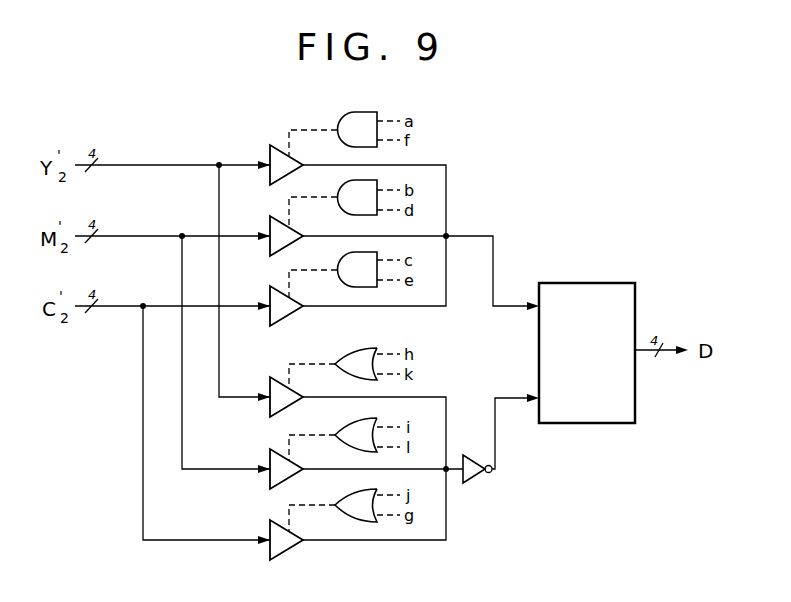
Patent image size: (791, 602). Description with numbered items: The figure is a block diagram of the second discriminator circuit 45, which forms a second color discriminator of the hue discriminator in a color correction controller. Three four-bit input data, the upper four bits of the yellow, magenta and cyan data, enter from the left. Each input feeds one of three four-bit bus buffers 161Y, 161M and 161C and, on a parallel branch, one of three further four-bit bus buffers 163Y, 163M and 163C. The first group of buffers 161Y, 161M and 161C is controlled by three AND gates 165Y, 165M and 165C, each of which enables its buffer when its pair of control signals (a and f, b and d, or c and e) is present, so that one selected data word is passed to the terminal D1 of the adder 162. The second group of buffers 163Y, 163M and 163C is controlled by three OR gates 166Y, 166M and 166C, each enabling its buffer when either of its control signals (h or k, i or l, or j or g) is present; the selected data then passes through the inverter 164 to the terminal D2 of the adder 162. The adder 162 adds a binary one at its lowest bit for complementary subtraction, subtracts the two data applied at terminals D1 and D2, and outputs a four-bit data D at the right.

The second discriminator circuit 45 is at (480, 176).
The 4-bits bus buffer 161Y is at (270, 148).
The 4-bits bus buffer 161M is at (270, 220).
The 4-bits bus buffer 161C is at (270, 290).
The 4-bits bus buffer 163Y is at (270, 380).
The 4-bits bus buffer 163M is at (270, 460).
The 4-bits bus buffer 163C is at (270, 530).
The AND gate 165Y is at (348, 112).
The AND gate 165M is at (349, 188).
The AND gate 165C is at (349, 258).
The OR gate 166Y is at (356, 348).
The OR gate 166M is at (354, 420).
The OR gate 166C is at (356, 490).
The inverter 164 is at (470, 483).
The adder 162 is at (608, 283).